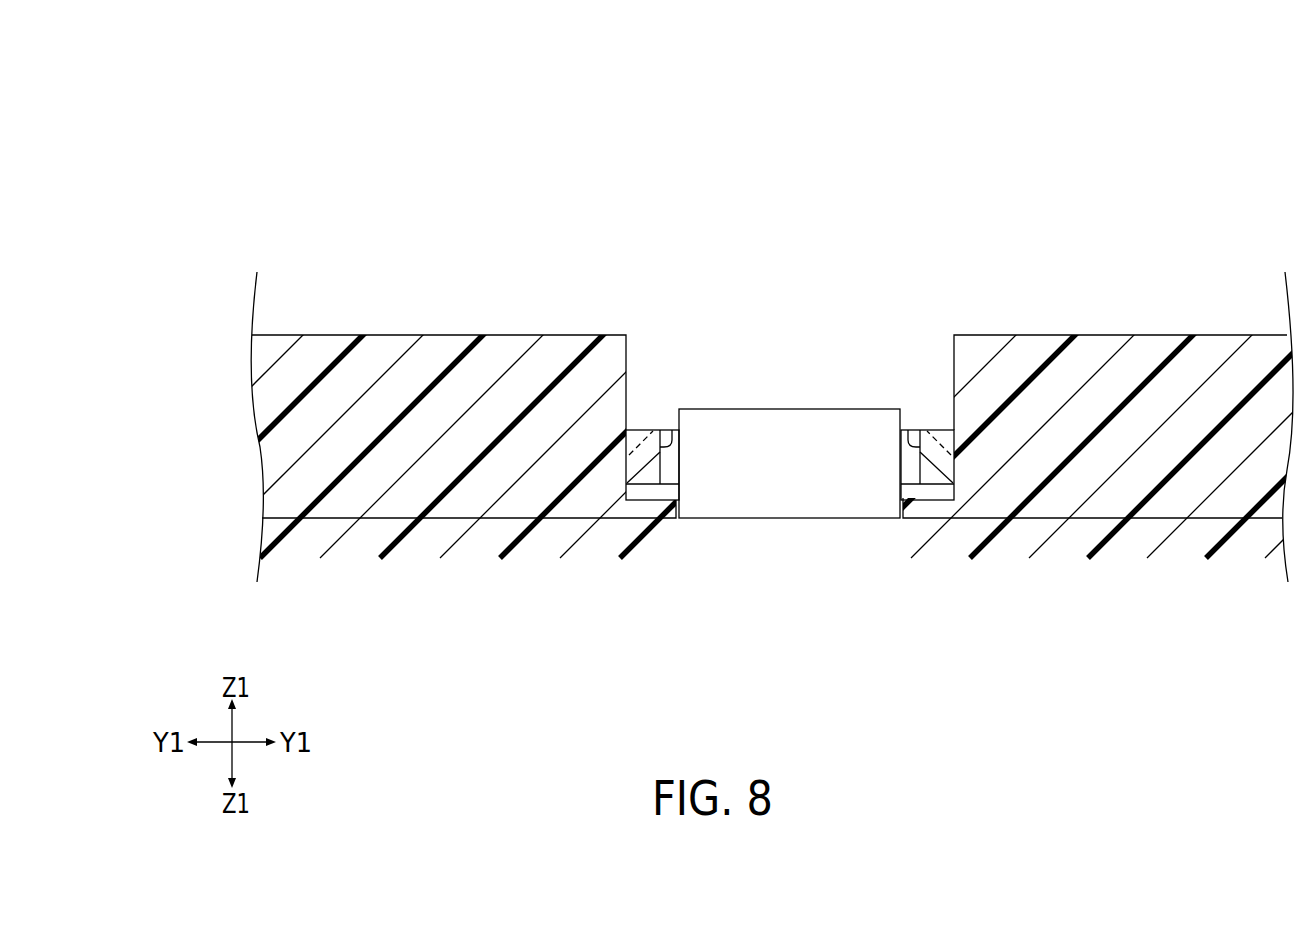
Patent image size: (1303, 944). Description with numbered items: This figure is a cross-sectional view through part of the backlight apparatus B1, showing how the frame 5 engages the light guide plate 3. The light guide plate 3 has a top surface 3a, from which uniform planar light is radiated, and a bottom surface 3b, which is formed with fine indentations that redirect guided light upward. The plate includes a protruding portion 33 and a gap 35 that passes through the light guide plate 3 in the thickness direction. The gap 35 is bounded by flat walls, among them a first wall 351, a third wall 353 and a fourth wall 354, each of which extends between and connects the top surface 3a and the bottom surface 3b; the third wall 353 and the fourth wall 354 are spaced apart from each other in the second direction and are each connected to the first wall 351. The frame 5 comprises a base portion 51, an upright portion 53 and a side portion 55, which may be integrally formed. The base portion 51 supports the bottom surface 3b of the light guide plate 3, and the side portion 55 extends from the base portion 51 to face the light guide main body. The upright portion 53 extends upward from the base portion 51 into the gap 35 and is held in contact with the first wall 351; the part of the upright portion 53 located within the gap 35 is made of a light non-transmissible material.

The backlight apparatus B1 is at (256, 124).
The frame 5 is at (385, 448).
The side portion 55 is at (428, 378).
The upright portion 53 is at (797, 462).
The base portion 51 is at (931, 510).
The light guide plate 3 is at (790, 518).
The protruding portion 33 is at (642, 462).
The gap 35 is at (913, 470).
The first wall 351 is at (670, 455).
The third wall 353 is at (662, 432).
The fourth wall 354 is at (917, 432).
The top surface 3a is at (637, 432).
The bottom surface 3b is at (632, 488).